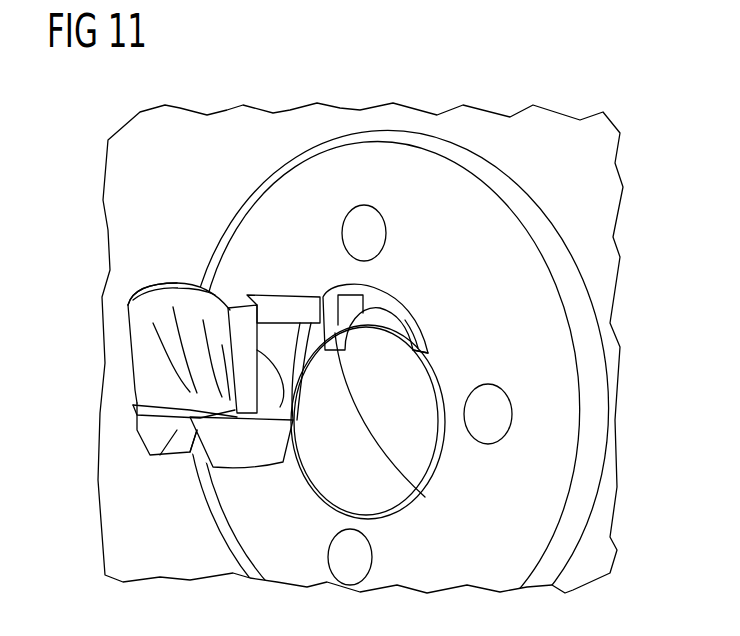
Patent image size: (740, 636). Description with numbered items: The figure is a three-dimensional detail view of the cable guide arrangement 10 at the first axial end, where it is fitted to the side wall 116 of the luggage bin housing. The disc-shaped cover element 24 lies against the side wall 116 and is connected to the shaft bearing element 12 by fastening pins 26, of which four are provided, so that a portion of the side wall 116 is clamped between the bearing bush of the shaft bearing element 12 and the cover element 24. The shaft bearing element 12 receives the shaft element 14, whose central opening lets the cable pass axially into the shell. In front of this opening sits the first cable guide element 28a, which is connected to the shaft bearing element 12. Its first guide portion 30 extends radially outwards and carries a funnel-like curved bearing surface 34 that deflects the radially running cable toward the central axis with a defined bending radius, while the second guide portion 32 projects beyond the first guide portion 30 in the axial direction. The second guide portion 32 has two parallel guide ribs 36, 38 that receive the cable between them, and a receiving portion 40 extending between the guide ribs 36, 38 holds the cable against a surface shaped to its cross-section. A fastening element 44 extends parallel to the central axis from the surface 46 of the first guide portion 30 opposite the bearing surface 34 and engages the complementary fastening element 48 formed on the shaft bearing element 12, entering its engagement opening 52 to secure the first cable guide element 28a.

The cable guide arrangement 10 is at (555, 78).
The side wall 116 is at (607, 208).
The cover element 24 is at (567, 388).
The fastening pins 26 is at (373, 218).
The shaft bearing element 12 is at (393, 492).
The shaft element 14 is at (423, 452).
The first guide portion 30 is at (172, 276).
The first cable guide element 28a is at (130, 292).
The bearing surface 34 is at (147, 352).
The receiving portion 40 is at (147, 407).
The guide rib 36 is at (147, 433).
The guide rib 38 is at (210, 445).
The surface 46 is at (245, 368).
The fastening element 44 is at (284, 307).
The second guide portion 32 is at (257, 457).
The engagement opening 52 is at (380, 302).
The complementary fastening element 48 is at (417, 342).